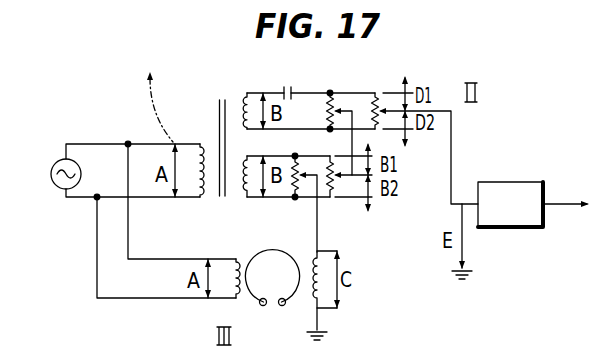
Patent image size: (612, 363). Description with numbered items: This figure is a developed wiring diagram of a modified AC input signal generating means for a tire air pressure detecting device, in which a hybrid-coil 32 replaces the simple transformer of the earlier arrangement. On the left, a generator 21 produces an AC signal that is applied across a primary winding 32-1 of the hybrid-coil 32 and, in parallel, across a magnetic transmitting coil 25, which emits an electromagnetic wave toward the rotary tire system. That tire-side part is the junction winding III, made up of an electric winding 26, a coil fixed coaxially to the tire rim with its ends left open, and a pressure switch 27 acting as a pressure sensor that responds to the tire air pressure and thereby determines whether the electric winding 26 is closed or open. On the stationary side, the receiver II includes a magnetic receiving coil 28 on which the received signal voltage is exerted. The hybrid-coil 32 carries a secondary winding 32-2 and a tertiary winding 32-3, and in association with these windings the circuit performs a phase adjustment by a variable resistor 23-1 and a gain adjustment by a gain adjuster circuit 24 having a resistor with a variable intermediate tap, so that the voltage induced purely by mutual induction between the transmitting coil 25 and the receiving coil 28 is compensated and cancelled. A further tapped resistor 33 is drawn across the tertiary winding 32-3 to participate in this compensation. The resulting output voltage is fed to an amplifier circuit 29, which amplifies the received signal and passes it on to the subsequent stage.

The generator 21 is at (51, 176).
The hybrid-coil 32 is at (215, 100).
The primary winding 32-1 is at (200, 146).
The secondary winding 32-2 is at (246, 96).
The tertiary winding 32-3 is at (243, 197).
The variable resistor 33 is at (253, 156).
The gain adjuster circuit 24 is at (332, 99).
The variable resistor 23-1 is at (332, 197).
The magnetic transmitting coil 25 is at (238, 259).
The electric winding 26 is at (271, 251).
The pressure switch 27 is at (266, 305).
The magnetic receiving coil 28 is at (319, 272).
The amplifier circuit 29 is at (500, 182).
The receiver II is at (430, 153).
The junction winding III is at (243, 298).